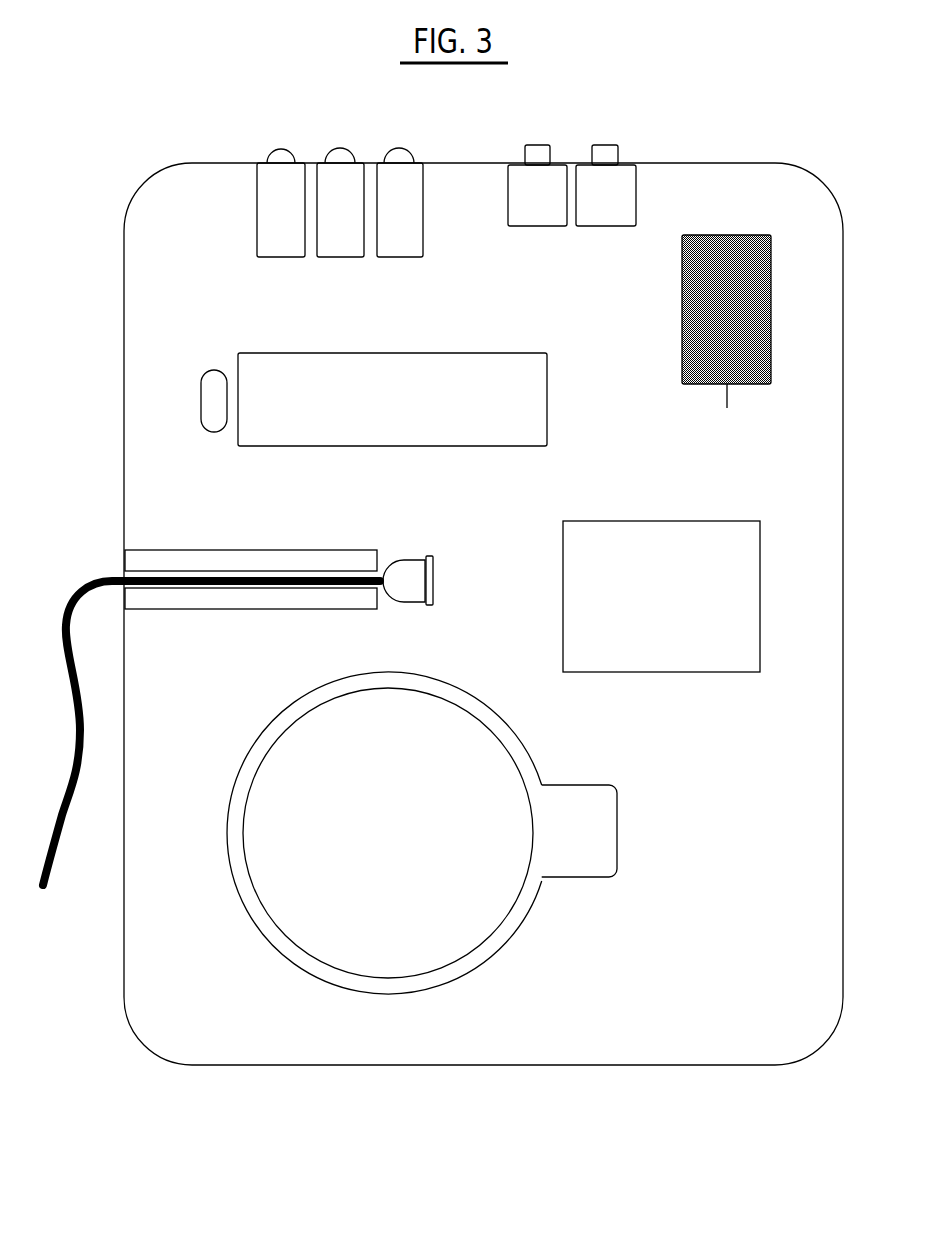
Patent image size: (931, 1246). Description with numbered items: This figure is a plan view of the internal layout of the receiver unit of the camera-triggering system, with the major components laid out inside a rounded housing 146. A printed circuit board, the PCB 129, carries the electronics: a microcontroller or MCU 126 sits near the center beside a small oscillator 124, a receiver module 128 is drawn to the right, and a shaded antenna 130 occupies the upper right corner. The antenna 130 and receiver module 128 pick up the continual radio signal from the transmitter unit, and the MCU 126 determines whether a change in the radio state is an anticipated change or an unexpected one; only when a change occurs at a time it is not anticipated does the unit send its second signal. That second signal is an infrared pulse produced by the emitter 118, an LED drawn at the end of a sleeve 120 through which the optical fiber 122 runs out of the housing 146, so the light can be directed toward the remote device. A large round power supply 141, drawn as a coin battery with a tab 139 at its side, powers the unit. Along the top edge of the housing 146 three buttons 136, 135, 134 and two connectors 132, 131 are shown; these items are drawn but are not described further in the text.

The housing 146 is at (472, 614).
The button 136 is at (281, 219).
The button 135 is at (340, 218).
The button 134 is at (400, 218).
The port connector 132 is at (537, 199).
The port connector 131 is at (606, 199).
The antenna 130 is at (726, 309).
The PCB 129 is at (664, 431).
The oscillator 124 is at (213, 388).
The MCU 126 is at (392, 399).
The receiver module 128 is at (661, 596).
The sleeve 120 is at (251, 579).
The optical fiber 122 is at (209, 733).
The emitter 118 is at (436, 580).
The power supply 141 is at (384, 833).
The battery tab 139 is at (579, 851).